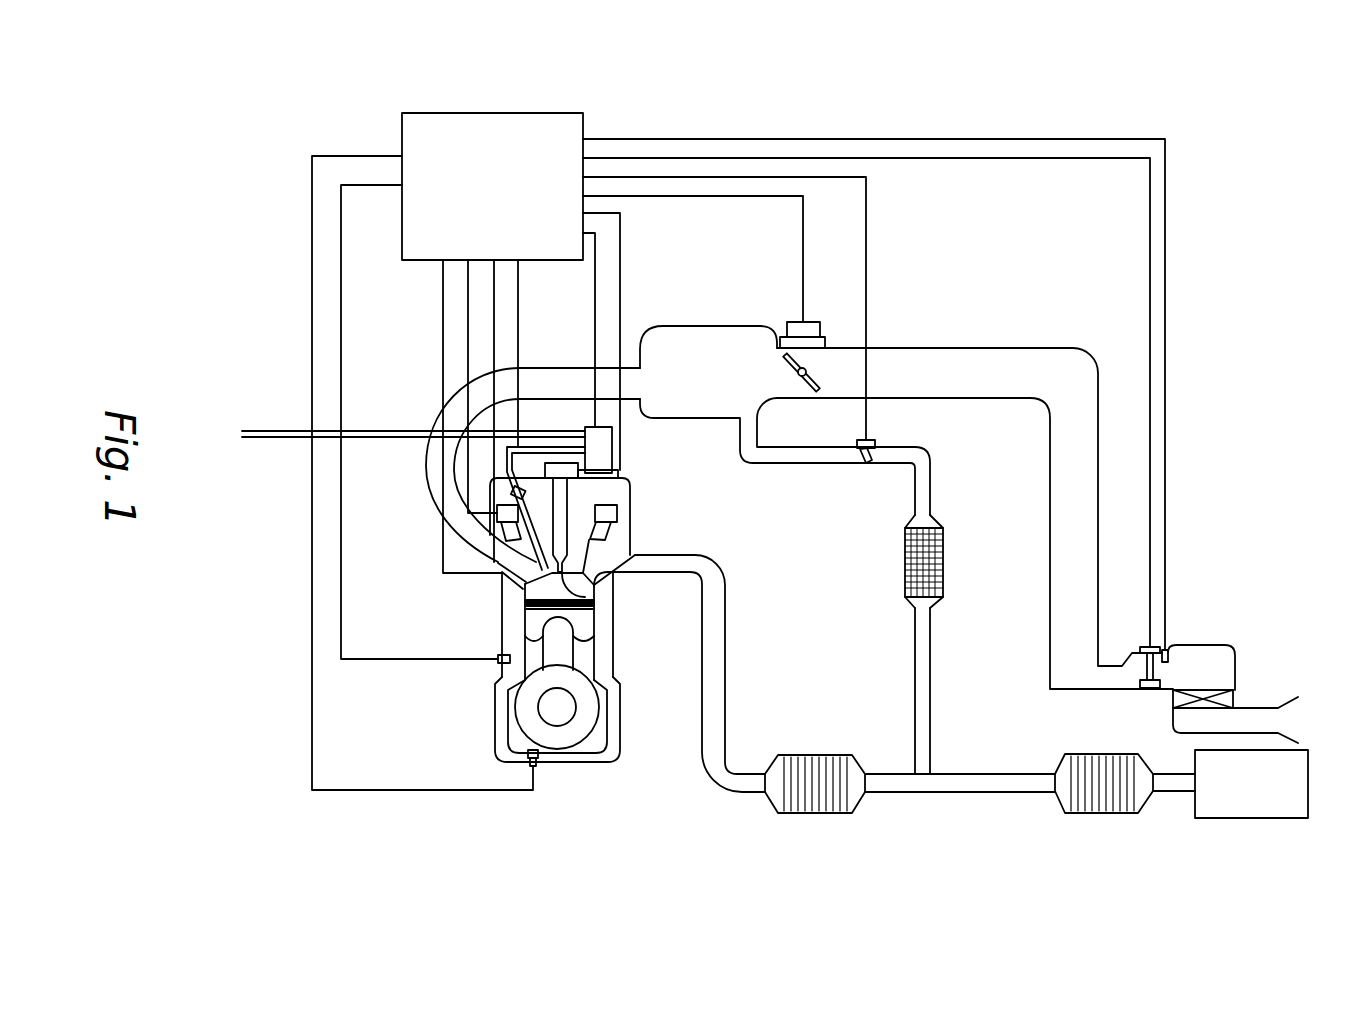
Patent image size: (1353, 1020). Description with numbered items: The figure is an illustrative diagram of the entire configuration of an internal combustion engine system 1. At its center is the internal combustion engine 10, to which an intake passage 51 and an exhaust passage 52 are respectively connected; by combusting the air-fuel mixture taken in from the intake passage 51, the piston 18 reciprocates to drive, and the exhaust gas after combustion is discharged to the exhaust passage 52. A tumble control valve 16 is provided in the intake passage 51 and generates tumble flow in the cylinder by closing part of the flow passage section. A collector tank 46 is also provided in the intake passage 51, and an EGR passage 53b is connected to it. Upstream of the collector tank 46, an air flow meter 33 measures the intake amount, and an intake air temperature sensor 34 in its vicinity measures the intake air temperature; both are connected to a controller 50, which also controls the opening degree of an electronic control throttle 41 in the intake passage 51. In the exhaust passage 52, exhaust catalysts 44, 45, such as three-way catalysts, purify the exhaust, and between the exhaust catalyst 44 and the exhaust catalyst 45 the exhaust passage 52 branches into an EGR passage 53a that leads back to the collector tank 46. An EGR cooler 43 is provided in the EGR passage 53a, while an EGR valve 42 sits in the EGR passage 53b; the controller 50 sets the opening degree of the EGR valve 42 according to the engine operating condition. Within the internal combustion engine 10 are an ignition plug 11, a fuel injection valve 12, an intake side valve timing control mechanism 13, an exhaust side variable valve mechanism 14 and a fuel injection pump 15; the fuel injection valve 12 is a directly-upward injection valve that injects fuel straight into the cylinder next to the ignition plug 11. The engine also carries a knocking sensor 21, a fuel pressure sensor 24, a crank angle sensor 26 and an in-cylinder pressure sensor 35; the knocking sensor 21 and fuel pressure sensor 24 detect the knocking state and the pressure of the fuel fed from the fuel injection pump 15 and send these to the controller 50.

The internal combustion engine system 1 is at (1153, 116).
The internal combustion engine 10 is at (566, 792).
The ignition plug 11 is at (596, 590).
The fuel injection valve 12 is at (498, 563).
The intake side valve timing control mechanism 13 is at (496, 513).
The exhaust side variable valve mechanism 14 is at (620, 512).
The fuel injection pump 15 is at (613, 447).
The tumble control valve 16 is at (478, 543).
The piston 18 is at (584, 628).
The knocking sensor 21 is at (497, 658).
The fuel pressure sensor 24 is at (510, 487).
The crank angle sensor 26 is at (526, 752).
The air flow meter 33 is at (1145, 646).
The intake air temperature sensor 34 is at (1170, 648).
The in-cylinder pressure sensor 35 is at (498, 575).
The electronic control throttle 41 is at (808, 380).
The EGR valve 42 is at (870, 456).
The EGR cooler 43 is at (943, 562).
The exhaust catalyst 44 is at (808, 812).
The exhaust catalyst 45 is at (1103, 813).
The collector tank 46 is at (727, 345).
The controller 50 is at (497, 112).
The intake passage 51 is at (1027, 363).
The exhaust passage 52 is at (716, 670).
The EGR passage 53a is at (928, 648).
The EGR passage 53b is at (806, 453).